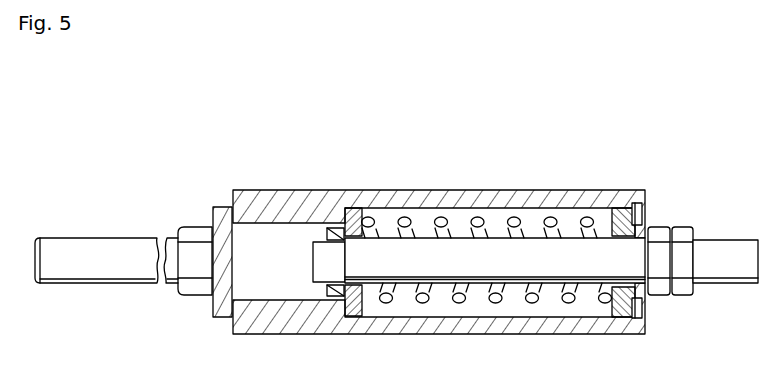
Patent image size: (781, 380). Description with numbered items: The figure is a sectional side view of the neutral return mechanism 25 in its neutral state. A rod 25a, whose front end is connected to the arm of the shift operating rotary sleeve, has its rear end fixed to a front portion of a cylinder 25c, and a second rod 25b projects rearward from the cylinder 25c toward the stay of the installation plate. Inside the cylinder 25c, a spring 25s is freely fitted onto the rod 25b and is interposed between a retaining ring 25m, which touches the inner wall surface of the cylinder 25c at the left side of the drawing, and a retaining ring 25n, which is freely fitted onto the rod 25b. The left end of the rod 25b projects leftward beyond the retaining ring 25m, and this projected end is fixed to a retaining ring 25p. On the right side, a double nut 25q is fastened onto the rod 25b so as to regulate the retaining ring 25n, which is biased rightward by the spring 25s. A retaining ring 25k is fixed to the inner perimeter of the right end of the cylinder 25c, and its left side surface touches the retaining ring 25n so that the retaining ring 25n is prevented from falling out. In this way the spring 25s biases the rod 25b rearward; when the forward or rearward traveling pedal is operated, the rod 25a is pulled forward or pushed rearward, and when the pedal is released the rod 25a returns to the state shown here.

The neutral return mechanism 25 is at (437, 130).
The rod 25a is at (100, 238).
The rod 25b is at (712, 240).
The cylinder 25c is at (316, 190).
The retaining ring 25m is at (352, 208).
The retaining ring 25p is at (333, 296).
The spring 25s is at (513, 216).
The retaining ring 25n is at (624, 210).
The retaining ring 25k is at (644, 218).
The double nut 25q is at (681, 300).